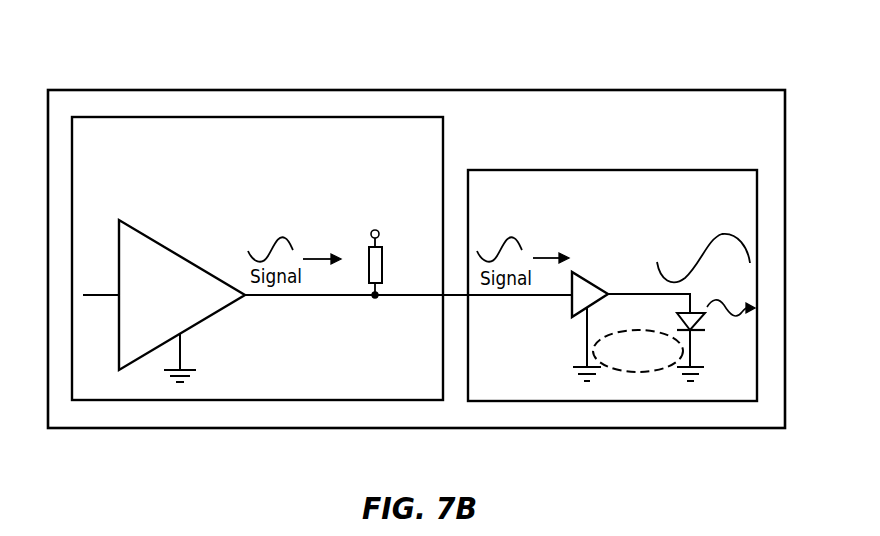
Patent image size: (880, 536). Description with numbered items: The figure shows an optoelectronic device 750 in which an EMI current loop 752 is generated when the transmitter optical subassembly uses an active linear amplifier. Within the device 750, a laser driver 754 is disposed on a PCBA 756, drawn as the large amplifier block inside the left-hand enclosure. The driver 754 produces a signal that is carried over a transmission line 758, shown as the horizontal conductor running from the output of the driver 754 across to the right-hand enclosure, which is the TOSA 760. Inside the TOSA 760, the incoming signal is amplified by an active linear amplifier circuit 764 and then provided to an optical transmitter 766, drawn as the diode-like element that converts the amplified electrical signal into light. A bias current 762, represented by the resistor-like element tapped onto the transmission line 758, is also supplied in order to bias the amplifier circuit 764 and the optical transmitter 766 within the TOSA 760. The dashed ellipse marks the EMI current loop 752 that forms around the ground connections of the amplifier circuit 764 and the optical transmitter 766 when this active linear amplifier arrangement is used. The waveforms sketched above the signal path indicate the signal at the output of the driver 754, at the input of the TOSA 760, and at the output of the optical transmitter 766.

The optoelectronic device 750 is at (418, 90).
The EMI current loop 752 is at (638, 372).
The laser driver 754 is at (183, 253).
The PCBA 756 is at (273, 156).
The transmission line 758 is at (453, 293).
The TOSA 760 is at (628, 201).
The bias current 762 is at (379, 233).
The active linear amplifier circuit 764 is at (595, 281).
The optical transmitter 766 is at (705, 330).